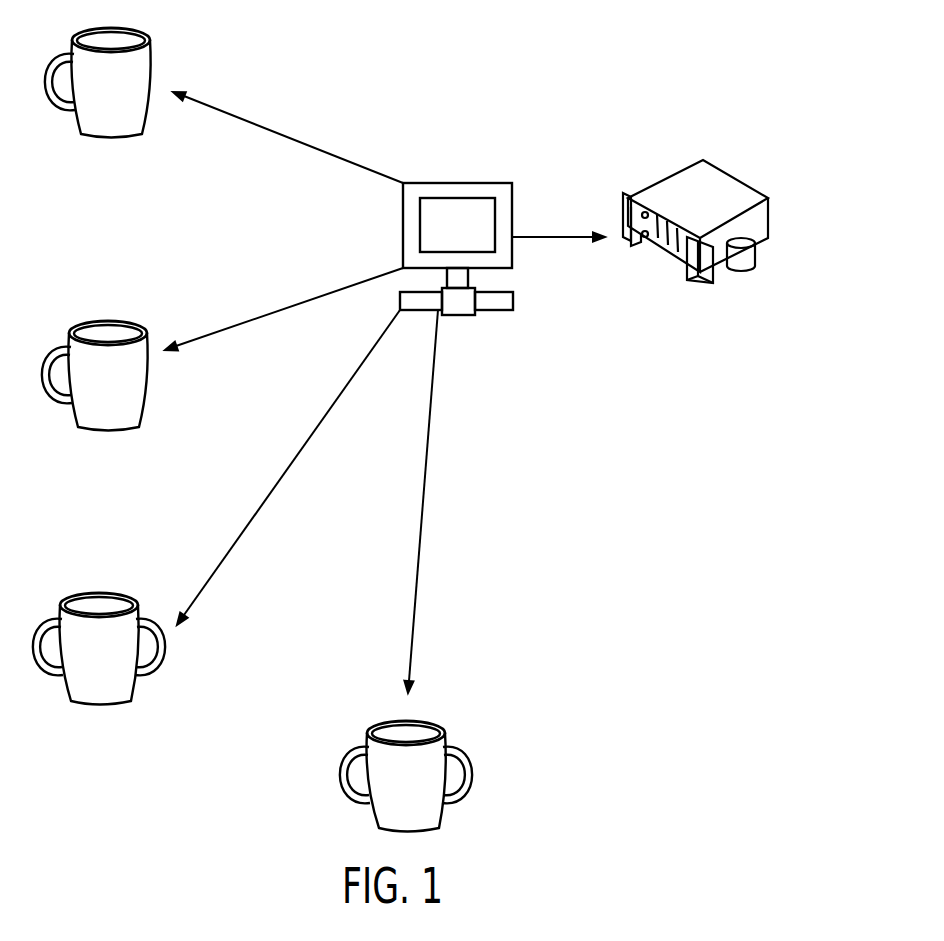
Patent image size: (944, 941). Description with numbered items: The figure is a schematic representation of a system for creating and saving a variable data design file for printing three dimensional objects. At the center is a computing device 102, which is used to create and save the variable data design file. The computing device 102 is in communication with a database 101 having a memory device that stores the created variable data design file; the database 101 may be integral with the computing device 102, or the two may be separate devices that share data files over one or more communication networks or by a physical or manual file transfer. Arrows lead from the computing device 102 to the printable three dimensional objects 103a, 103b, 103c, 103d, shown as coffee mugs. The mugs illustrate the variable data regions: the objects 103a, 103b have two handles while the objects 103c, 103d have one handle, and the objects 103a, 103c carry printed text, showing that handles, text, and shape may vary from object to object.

The database 101 is at (688, 277).
The computing device 102 is at (513, 303).
The 3D object 103a is at (465, 798).
The 3D object 103b is at (143, 677).
The 3D object 103c is at (143, 403).
The 3D object 103d is at (145, 110).